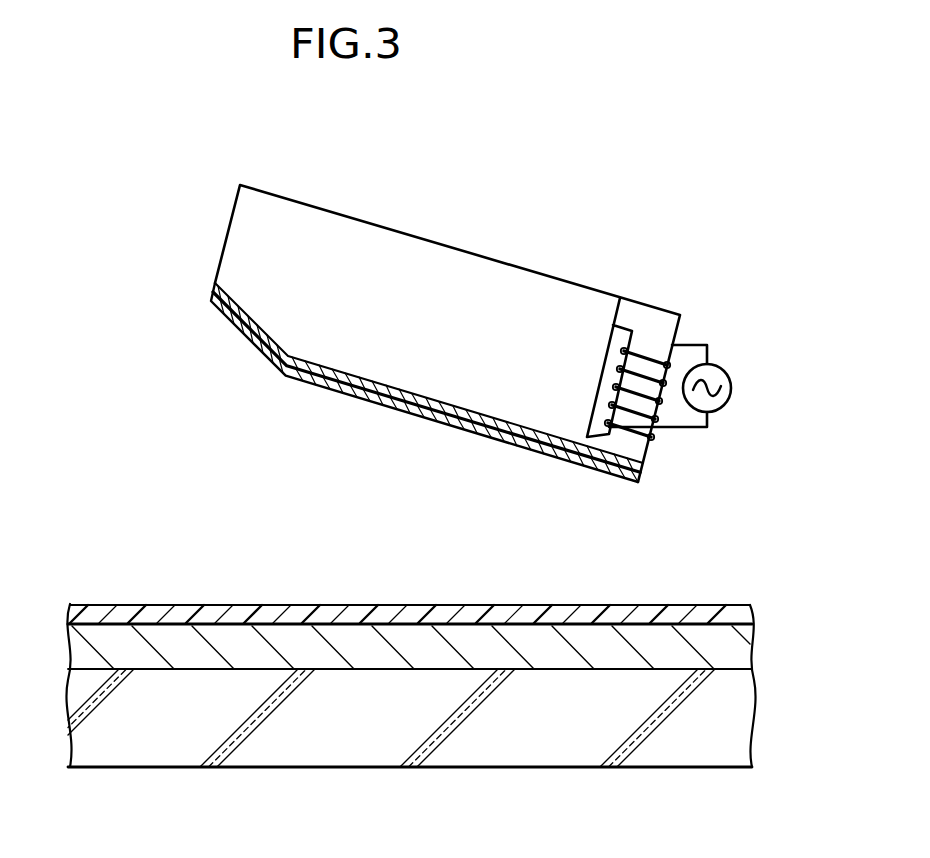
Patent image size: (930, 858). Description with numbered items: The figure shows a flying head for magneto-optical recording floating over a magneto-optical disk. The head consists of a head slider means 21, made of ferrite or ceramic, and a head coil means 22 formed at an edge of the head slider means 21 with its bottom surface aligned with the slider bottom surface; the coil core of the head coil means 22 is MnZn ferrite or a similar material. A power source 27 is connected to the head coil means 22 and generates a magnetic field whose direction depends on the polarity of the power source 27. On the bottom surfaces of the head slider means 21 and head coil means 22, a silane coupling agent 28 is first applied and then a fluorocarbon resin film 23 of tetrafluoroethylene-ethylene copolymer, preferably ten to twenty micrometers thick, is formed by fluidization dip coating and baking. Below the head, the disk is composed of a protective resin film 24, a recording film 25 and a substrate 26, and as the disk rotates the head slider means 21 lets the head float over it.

The head slider means 21 is at (483, 275).
The head coil means 22 is at (646, 358).
The fluorocarbon resin film 23 is at (245, 338).
The protective resin film 24 is at (736, 613).
The recording film 25 is at (755, 638).
The substrate 26 is at (735, 722).
The power source 27 is at (711, 362).
The silane coupling agent 28 is at (242, 303).